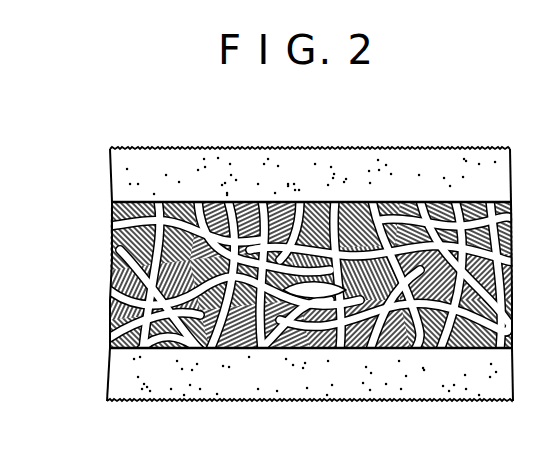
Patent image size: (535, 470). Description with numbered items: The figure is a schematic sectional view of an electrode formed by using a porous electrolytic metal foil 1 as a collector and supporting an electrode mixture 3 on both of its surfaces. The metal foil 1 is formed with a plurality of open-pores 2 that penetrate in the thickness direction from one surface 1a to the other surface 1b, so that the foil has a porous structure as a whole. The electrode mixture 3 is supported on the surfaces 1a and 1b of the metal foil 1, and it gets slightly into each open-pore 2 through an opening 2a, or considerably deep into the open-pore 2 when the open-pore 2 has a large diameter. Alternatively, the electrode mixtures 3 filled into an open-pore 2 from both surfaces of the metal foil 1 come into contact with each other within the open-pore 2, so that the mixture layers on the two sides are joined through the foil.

The metal foil 1 is at (274, 278).
The one surface 1a is at (310, 200).
The other surface 1b is at (268, 349).
The open-pore 2 is at (117, 280).
The opening 2a is at (231, 201).
The electrode mixture 3 is at (385, 162).